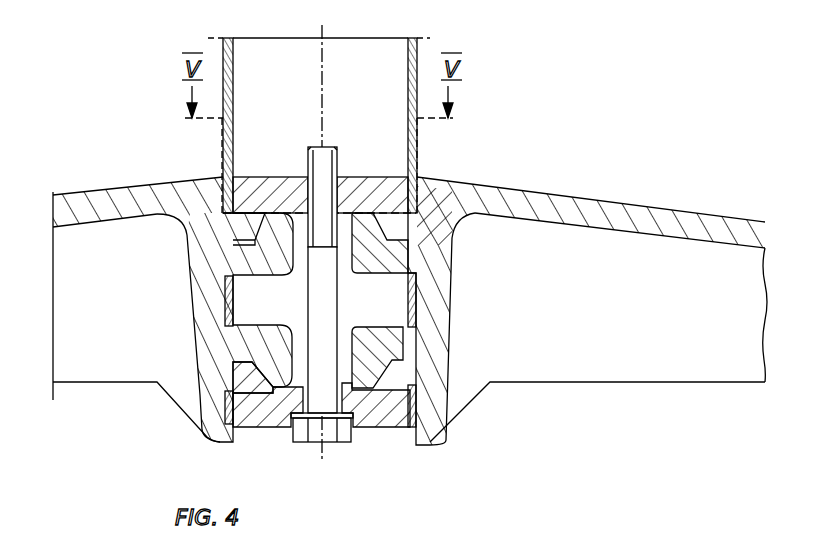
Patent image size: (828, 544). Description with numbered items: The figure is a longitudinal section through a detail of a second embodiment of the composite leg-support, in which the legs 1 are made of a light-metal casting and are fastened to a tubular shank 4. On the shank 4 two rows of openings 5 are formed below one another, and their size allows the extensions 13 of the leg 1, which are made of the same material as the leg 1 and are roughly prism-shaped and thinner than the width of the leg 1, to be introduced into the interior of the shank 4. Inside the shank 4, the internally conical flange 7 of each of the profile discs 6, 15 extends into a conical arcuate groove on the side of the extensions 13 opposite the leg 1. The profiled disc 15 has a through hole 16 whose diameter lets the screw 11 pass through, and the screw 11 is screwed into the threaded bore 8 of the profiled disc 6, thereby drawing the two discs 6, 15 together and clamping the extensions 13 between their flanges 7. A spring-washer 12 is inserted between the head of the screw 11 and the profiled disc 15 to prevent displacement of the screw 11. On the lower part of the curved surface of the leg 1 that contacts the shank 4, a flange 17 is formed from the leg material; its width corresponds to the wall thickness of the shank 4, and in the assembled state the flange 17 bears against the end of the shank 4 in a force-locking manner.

The leg 1 is at (108, 194).
The shank 4 is at (418, 57).
The openings 5 is at (496, 202).
The profile disc 6 is at (397, 177).
The internally conical flange 7 is at (453, 186).
The threaded bore 8 is at (309, 182).
The screw 11 is at (318, 436).
The spring-washer 12 is at (297, 428).
The extensions 13 is at (375, 266).
The profiled disc 15 is at (388, 420).
The through hole 16 is at (315, 385).
The flange 17 is at (229, 443).